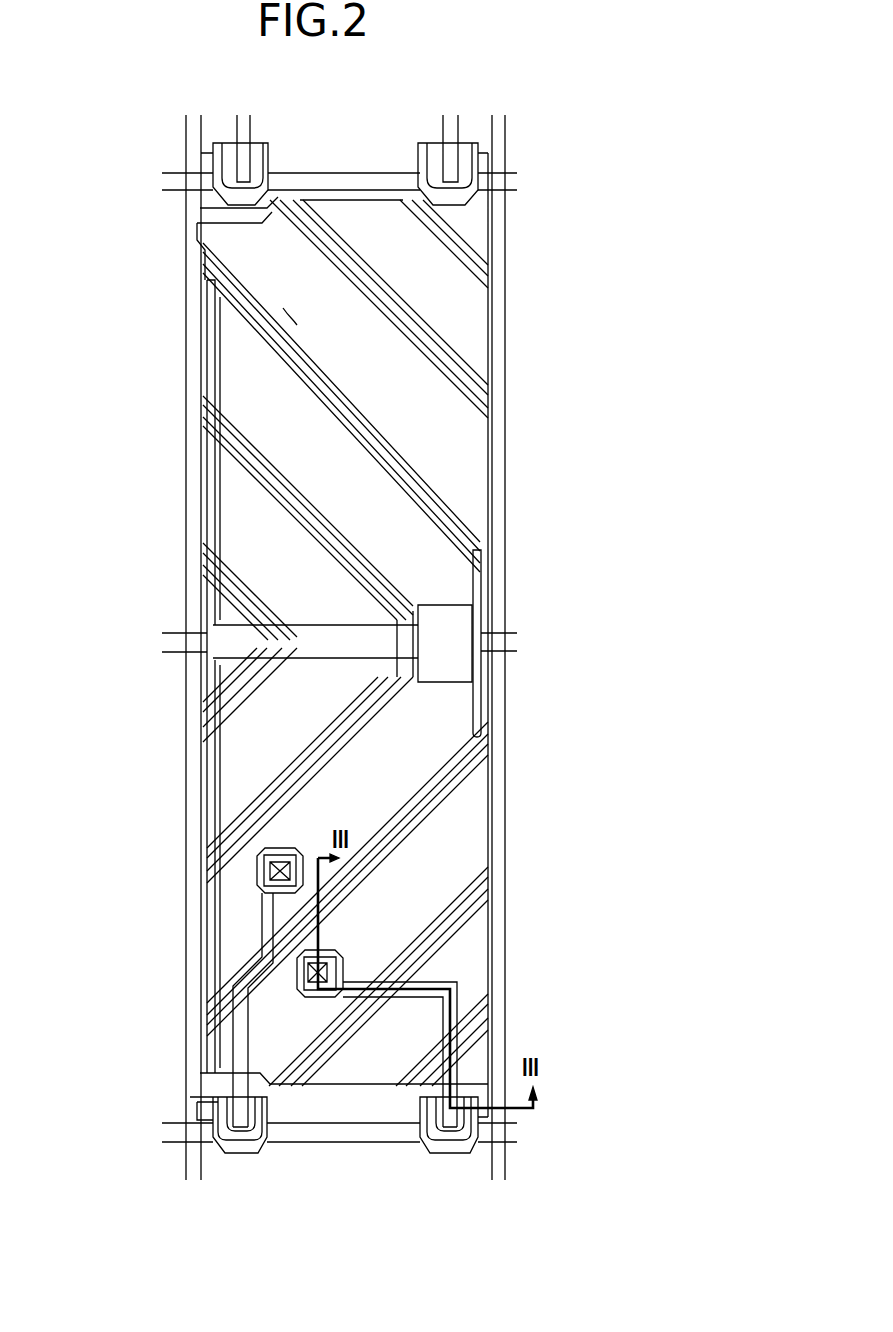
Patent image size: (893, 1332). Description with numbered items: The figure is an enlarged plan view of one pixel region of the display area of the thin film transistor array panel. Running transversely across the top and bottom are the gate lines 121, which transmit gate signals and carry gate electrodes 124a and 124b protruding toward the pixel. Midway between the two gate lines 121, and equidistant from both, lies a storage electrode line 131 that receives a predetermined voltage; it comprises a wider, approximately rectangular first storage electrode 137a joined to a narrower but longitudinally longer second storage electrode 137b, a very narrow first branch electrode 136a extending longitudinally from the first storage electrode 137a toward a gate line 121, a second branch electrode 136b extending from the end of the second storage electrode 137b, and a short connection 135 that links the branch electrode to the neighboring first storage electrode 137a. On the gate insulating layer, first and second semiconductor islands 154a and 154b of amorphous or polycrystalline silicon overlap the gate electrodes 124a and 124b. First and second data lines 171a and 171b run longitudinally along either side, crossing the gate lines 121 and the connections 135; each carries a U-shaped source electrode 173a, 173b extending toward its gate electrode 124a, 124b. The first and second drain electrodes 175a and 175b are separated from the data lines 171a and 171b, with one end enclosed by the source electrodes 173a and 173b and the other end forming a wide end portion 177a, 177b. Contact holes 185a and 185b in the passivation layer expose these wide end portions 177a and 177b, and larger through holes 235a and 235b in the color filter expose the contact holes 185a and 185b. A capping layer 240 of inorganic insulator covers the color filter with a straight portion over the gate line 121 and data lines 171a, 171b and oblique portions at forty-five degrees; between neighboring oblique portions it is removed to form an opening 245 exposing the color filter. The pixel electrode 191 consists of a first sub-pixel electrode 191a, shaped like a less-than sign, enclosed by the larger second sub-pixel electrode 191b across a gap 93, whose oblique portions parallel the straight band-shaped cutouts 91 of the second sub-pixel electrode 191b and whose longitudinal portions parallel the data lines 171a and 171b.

The gate line 121 is at (325, 1145).
The first gate electrode 124a is at (240, 1158).
The second gate electrode 124b is at (455, 1153).
The storage electrode line 131 is at (273, 639).
The connection 135 is at (433, 600).
The first branch electrode 136a is at (440, 493).
The second branch electrode 136b is at (450, 767).
The first storage electrode 137a is at (303, 623).
The second storage electrode 137b is at (488, 620).
The first semiconductor island 154a is at (260, 1130).
The second semiconductor island 154b is at (433, 1140).
The first data line 171a is at (186, 205).
The second data line 171b is at (488, 224).
The first source electrode 173a is at (218, 1152).
The second source electrode 173b is at (468, 1147).
The first drain electrode 175a is at (233, 1030).
The second drain electrode 175b is at (443, 1047).
The wide end portion 177a is at (290, 845).
The wide end portion 177b is at (337, 953).
The contact hole 185a is at (267, 877).
The contact hole 185b is at (310, 977).
The pixel electrode 191 is at (275, 635).
The first sub-pixel electrode 191a is at (350, 400).
The second sub-pixel electrode 191b is at (310, 368).
The through hole 235a is at (263, 862).
The through hole 235b is at (300, 957).
The capping layer 240 is at (300, 365).
The opening 245 is at (290, 315).
The cutout 91 is at (370, 287).
The gap 93 is at (290, 503).